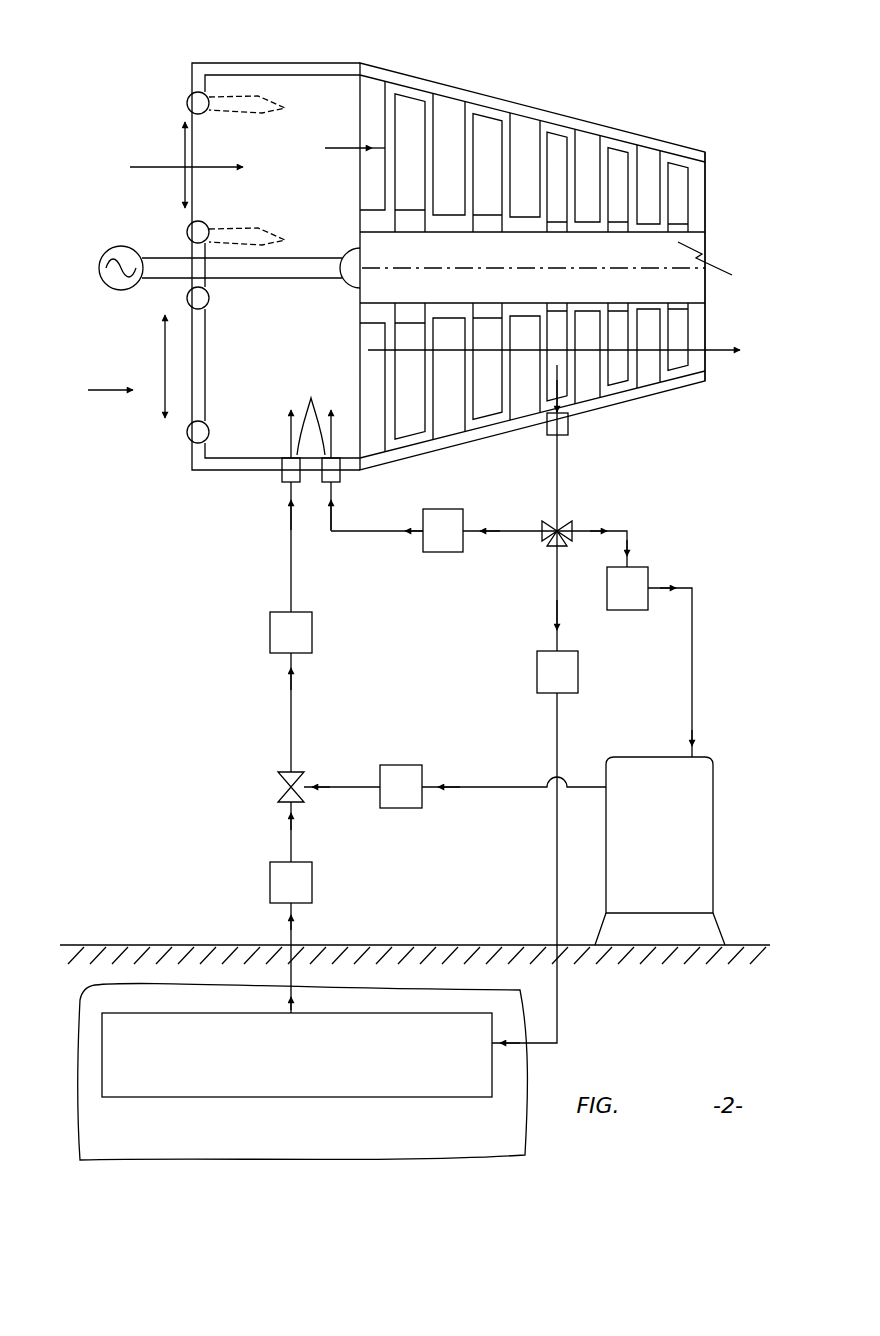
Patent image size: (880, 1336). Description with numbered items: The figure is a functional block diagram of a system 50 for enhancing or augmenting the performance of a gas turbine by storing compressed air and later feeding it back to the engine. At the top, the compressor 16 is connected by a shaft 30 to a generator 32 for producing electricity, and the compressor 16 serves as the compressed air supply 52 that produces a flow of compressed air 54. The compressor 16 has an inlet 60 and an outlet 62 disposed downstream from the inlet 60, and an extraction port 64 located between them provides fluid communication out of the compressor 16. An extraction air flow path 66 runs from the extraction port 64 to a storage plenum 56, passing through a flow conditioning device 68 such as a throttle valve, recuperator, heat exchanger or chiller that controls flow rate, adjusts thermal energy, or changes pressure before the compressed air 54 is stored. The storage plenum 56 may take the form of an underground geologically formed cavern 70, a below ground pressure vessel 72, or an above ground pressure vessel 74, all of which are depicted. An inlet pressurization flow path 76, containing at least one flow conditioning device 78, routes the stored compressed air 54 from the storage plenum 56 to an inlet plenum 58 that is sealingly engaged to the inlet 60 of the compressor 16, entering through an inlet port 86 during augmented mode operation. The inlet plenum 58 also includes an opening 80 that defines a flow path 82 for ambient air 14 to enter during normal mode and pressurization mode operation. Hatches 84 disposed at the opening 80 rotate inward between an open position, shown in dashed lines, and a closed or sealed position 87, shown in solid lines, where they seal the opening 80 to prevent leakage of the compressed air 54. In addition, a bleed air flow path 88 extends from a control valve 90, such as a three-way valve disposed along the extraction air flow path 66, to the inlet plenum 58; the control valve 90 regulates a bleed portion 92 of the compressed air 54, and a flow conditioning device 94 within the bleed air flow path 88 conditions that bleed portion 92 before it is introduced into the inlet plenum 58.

The ambient air 14 is at (200, 166).
The compressor 16 is at (634, 124).
The shaft 30 is at (546, 263).
The generator 32 is at (106, 252).
The system 50 is at (120, 76).
The compressed air supply 52 is at (564, 95).
The compressed air 54 is at (720, 350).
The storage plenum 56 is at (648, 847).
The inlet plenum 58 is at (272, 60).
The inlet 60 is at (358, 87).
The outlet 62 is at (708, 173).
The extraction port 64 is at (572, 425).
The extraction air flow path 66 is at (553, 479).
The flow conditioning device 68 is at (545, 684).
The underground geologically formed cavern 70 is at (78, 1130).
The below ground pressure vessel 72 is at (102, 1057).
The above ground pressure vessel 74 is at (713, 853).
The inlet pressurization flow path 76 is at (288, 585).
The flow conditioning device 78 is at (279, 644).
The opening 80 is at (182, 147).
The flow path 82 is at (150, 182).
The hatches 84 is at (212, 94).
The inlet port 86 is at (311, 400).
The closed or sealed position 87 is at (265, 116).
The bleed air flow path 88 is at (405, 534).
The control valve 90 is at (550, 520).
The bleed portion 92 is at (497, 528).
The flow conditioning device 94 is at (431, 543).